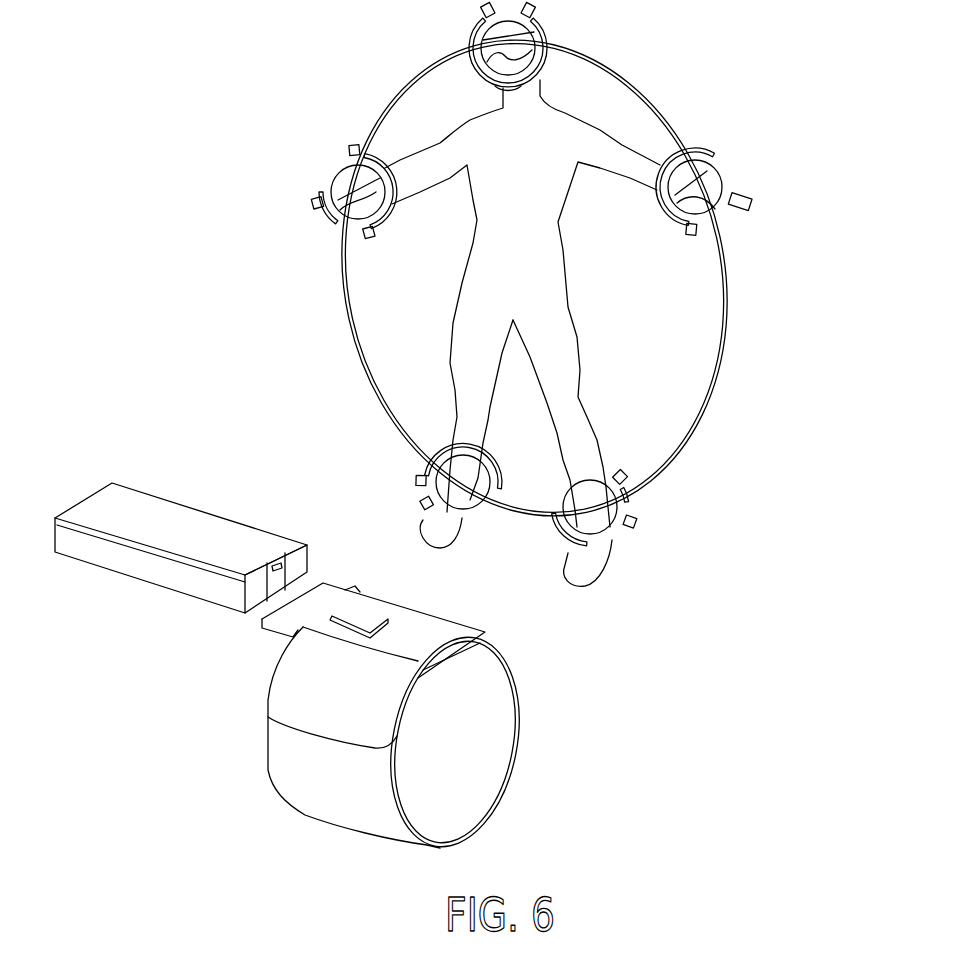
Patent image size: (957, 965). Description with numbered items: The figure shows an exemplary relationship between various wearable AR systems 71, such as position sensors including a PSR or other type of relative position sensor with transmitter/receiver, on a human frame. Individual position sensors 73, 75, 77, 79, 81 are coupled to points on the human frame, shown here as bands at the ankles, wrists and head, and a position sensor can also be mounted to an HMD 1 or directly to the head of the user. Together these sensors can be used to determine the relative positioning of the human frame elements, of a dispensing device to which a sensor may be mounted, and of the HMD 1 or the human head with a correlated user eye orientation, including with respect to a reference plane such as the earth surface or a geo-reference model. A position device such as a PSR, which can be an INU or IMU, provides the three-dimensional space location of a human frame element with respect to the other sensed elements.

The HMD 1 is at (474, 66).
The wearable AR systems 71 is at (608, 687).
The position sensor 73 is at (620, 497).
The position sensor 75 is at (707, 177).
The position sensor 77 is at (427, 472).
The position sensor 79 is at (333, 192).
The position sensor 81 is at (480, 37).